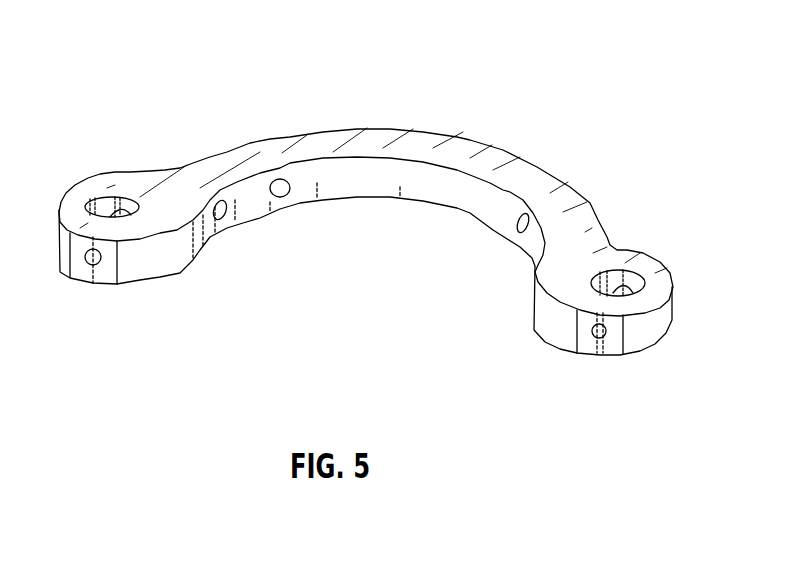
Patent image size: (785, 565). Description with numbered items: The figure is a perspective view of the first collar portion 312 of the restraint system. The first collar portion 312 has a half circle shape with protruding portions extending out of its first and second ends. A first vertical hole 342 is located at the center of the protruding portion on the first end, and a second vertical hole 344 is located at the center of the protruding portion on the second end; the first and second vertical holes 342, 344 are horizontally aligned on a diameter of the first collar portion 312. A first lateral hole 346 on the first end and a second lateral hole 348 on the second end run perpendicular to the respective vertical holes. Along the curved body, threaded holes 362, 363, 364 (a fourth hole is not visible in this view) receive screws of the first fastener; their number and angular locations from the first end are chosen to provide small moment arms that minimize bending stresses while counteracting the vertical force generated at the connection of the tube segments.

The first collar portion 312 is at (152, 34).
The first vertical hole 342 is at (617, 270).
The second vertical hole 344 is at (113, 200).
The first lateral hole 346 is at (593, 334).
The second lateral hole 348 is at (86, 259).
The threaded hole 362 is at (518, 226).
The threaded hole 363 is at (288, 191).
The threaded hole 364 is at (227, 215).